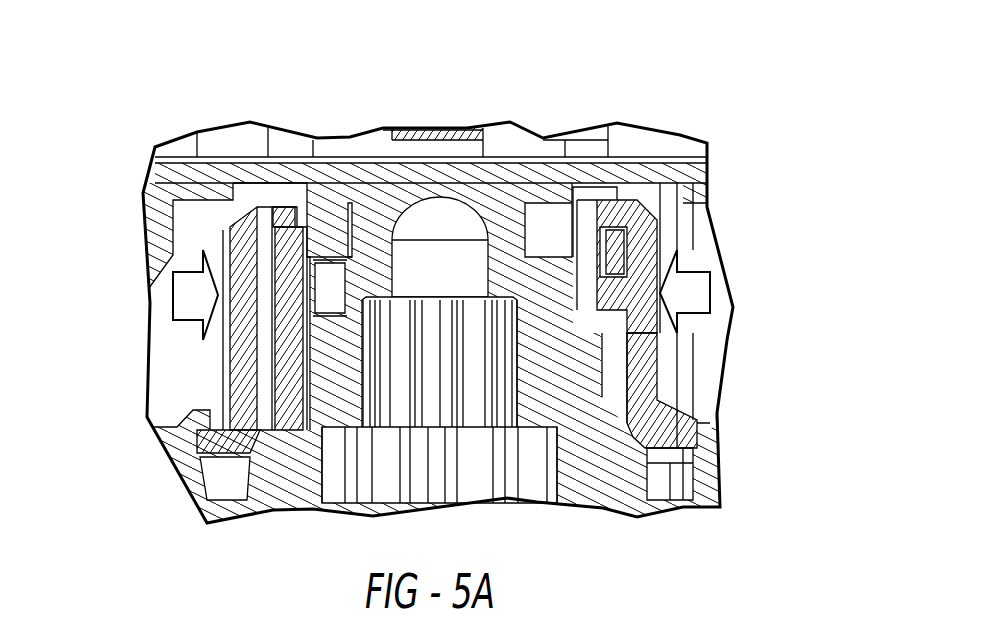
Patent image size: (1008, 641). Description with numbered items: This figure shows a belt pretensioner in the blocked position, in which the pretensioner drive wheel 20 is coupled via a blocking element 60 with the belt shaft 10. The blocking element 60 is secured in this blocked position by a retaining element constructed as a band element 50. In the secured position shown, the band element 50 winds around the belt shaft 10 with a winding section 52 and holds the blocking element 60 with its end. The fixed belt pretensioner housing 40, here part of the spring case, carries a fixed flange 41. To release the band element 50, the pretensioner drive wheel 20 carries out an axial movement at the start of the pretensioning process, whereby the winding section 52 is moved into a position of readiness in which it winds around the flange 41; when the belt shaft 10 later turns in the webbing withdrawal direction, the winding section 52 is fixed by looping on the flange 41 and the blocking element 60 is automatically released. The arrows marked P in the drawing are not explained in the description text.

The belt shaft 10 is at (600, 477).
The pretensioner drive wheel 20 is at (643, 378).
The belt pretensioner housing 40 is at (553, 193).
The flange 41 is at (330, 237).
The band element 50 is at (617, 242).
The winding section 52 is at (613, 305).
The blocking element 60 is at (293, 360).
The pressure P is at (712, 277).